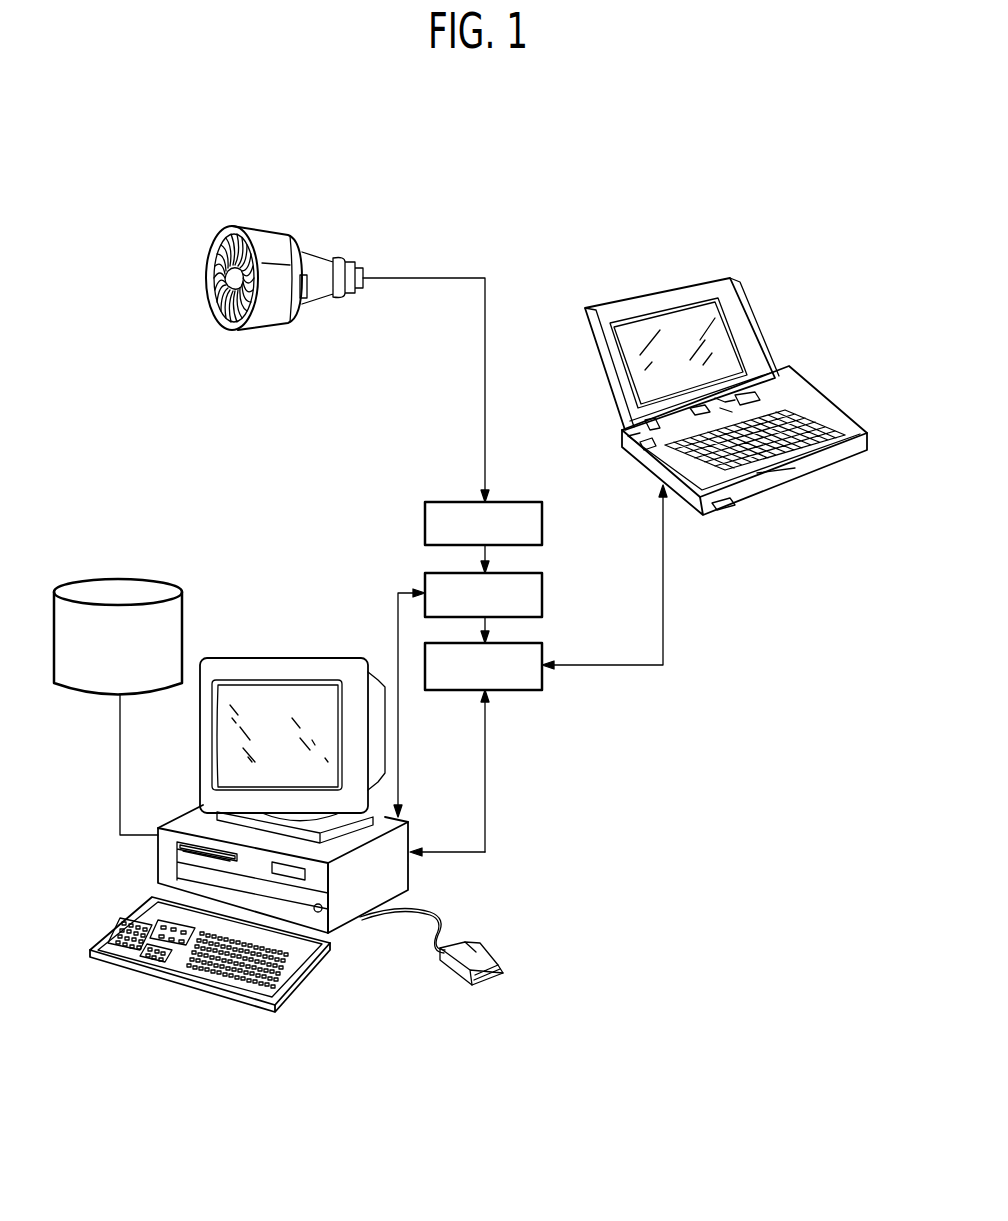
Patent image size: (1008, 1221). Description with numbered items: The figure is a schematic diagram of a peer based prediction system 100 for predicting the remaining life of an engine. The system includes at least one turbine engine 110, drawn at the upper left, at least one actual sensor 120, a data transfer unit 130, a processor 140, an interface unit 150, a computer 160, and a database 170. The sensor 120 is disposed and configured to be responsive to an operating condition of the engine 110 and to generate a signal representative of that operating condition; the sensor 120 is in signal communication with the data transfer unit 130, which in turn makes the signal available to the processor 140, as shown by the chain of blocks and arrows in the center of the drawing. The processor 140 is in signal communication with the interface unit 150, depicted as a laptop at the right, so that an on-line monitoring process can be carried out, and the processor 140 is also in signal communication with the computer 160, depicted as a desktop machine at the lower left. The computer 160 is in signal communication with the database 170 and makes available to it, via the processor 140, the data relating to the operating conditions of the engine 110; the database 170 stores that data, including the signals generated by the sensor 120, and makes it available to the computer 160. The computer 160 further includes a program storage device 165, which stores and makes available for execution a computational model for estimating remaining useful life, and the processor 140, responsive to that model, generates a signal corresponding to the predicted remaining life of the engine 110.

The peer based prediction system 100 is at (136, 190).
The turbine engine 110 is at (347, 262).
The actual sensor 120 is at (547, 525).
The data transfer unit (DTU) 130 is at (547, 603).
The processor 140 is at (547, 658).
The interface unit 150 is at (757, 333).
The computer 160 is at (412, 872).
The program storage device 165 is at (177, 862).
The database 170 is at (112, 580).